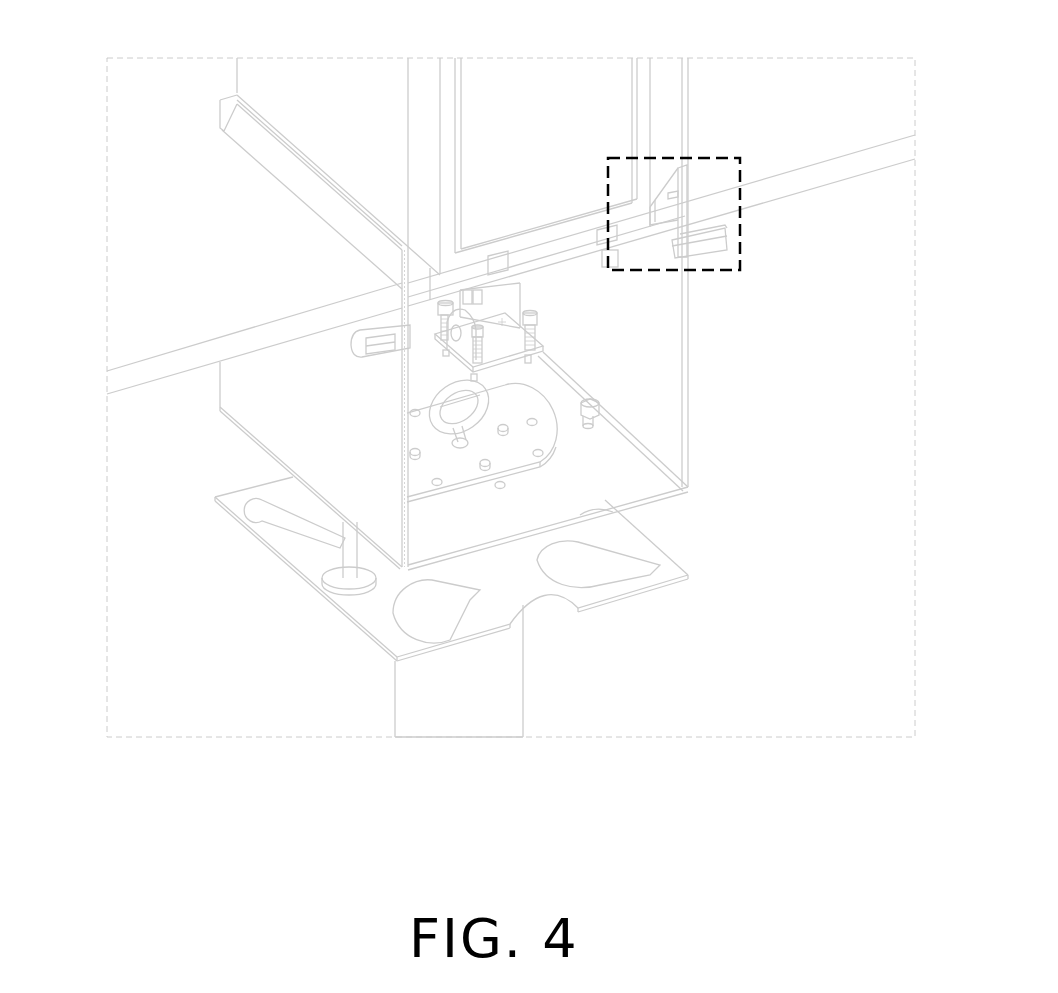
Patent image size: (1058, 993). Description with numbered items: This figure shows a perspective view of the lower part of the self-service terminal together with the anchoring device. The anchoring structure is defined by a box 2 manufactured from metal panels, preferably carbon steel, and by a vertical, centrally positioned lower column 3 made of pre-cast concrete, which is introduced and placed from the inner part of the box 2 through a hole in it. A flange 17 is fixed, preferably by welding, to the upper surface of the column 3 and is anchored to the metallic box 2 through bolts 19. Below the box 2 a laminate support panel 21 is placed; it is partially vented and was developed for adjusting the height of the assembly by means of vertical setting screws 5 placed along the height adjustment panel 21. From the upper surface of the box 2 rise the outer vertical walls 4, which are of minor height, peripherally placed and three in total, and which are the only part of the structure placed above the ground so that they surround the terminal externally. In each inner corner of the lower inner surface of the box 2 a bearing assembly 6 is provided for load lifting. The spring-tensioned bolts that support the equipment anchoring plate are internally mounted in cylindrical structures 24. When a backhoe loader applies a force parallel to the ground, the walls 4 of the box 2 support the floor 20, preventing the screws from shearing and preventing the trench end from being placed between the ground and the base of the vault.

The box 2 is at (320, 425).
The lower column 3 is at (460, 715).
The outer vertical walls 4 is at (233, 90).
The vertical setting screws 5 is at (352, 550).
The bearing assembly 6 is at (542, 328).
The flange 17 is at (548, 446).
The bolts 19 is at (437, 482).
The floor 20 is at (160, 258).
The laminate support panel 21 is at (315, 582).
The cylindrical structures 24 is at (372, 355).